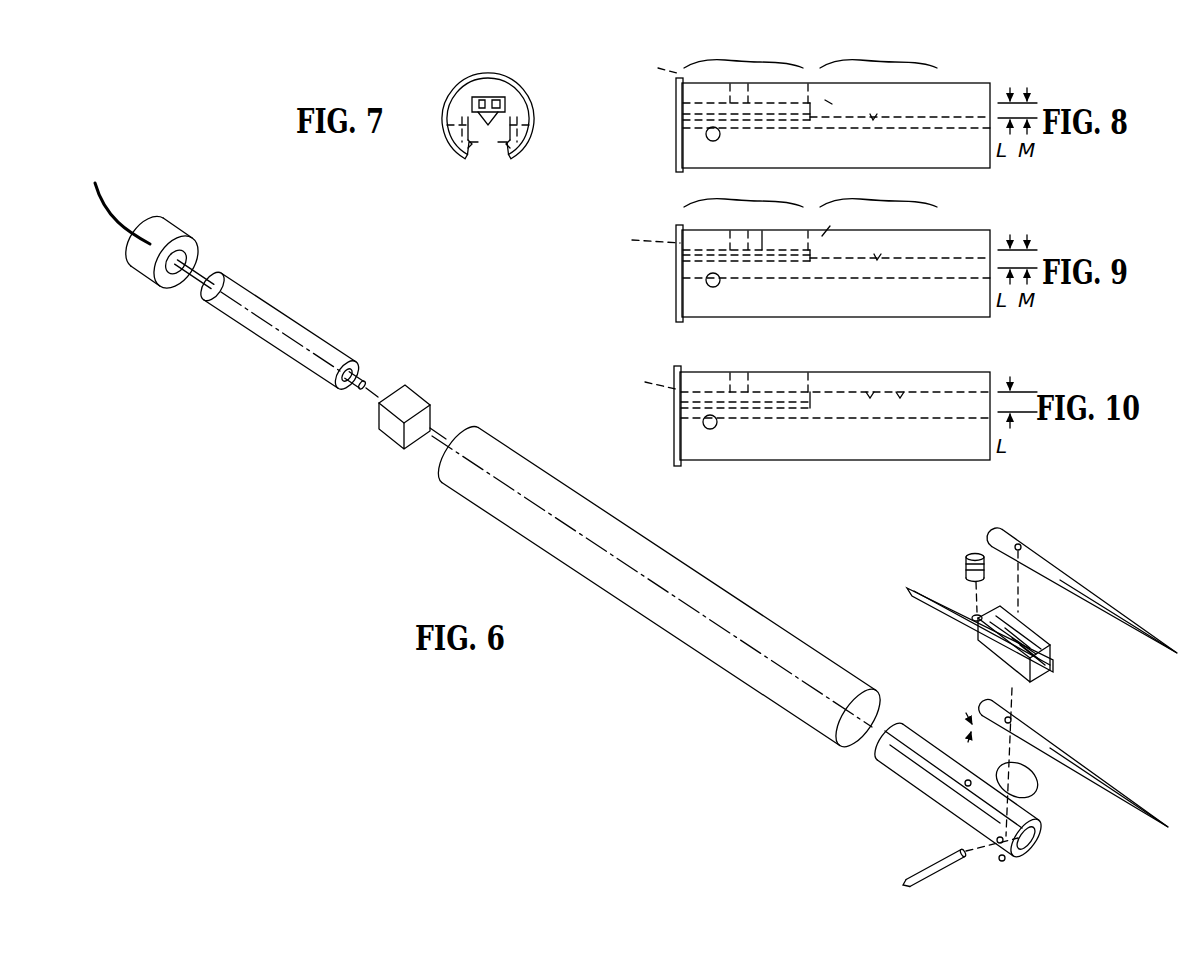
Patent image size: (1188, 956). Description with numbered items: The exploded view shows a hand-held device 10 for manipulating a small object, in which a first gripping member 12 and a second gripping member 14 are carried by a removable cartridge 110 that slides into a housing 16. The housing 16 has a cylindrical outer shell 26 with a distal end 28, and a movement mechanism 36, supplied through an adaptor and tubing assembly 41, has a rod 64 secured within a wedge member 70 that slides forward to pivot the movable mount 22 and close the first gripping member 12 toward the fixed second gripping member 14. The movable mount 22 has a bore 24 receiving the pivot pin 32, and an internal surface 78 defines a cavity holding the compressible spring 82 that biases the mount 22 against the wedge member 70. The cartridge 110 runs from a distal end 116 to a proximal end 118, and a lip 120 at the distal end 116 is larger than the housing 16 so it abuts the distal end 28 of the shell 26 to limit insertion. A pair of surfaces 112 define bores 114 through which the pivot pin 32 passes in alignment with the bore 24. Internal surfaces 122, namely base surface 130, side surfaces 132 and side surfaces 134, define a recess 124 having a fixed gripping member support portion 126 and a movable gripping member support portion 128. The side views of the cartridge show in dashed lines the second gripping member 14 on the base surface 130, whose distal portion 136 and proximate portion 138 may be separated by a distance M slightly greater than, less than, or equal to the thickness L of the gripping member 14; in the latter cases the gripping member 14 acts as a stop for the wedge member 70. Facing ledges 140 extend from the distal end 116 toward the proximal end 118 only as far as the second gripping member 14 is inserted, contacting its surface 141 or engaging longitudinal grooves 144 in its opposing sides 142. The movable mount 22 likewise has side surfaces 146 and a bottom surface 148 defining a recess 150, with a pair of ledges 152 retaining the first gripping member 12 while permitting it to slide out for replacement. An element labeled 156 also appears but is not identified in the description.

In FIG. 6, the device 10 is at (352, 522).
In FIG. 6, the first gripping member 12 is at (1074, 567).
In FIG. 6, the second gripping member 14 is at (1099, 769).
In FIG. 8, the second gripping member 14 is at (656, 73).
In FIG. 9, the second gripping member 14 is at (640, 243).
In FIG. 10, the second gripping member 14 is at (646, 384).
In FIG. 6, the housing 16 is at (684, 654).
In FIG. 6, the movable mount 22 is at (950, 630).
In FIG. 6, the bore 24 is at (1052, 656).
In FIG. 6, the outer shell 26 is at (722, 670).
In FIG. 6, the distal end 28 is at (836, 754).
In FIG. 6, the pivot pin 32 is at (925, 864).
In FIG. 6, the movement mechanism 36 is at (296, 318).
In FIG. 6, the adaptor and tubing assembly 41 is at (176, 212).
In FIG. 6, the rod 64 is at (368, 385).
In FIG. 6, the wedge member 70 is at (388, 432).
In FIG. 6, the internal surface 78 is at (972, 620).
In FIG. 6, the compressible spring 82 is at (973, 553).
In FIG. 6, the cartridge 110 is at (920, 802).
In FIG. 7, the cartridge 110 is at (539, 97).
In FIG. 8, the cartridge 110 is at (803, 122).
In FIG. 9, the cartridge 110 is at (821, 262).
In FIG. 10, the cartridge 110 is at (809, 414).
In FIG. 6, the surfaces 112 is at (986, 840).
In FIG. 6, the bores 114 is at (997, 861).
In FIG. 8, the bores 114 is at (715, 142).
In FIG. 9, the bores 114 is at (712, 287).
In FIG. 10, the bores 114 is at (710, 429).
In FIG. 6, the distal end 116 is at (1024, 872).
In FIG. 6, the proximal end 118 is at (866, 774).
In FIG. 6, the lip 120 is at (1060, 818).
In FIG. 7, the lip 120 is at (500, 93).
In FIG. 8, the lip 120 is at (677, 164).
In FIG. 9, the lip 120 is at (677, 275).
In FIG. 10, the lip 120 is at (676, 430).
In FIG. 6, the internal surfaces 122 is at (898, 730).
In FIG. 7, the internal surfaces 122 is at (496, 148).
In FIG. 6, the recess 124 is at (927, 742).
In FIG. 7, the recess 124 is at (470, 130).
In FIG. 8, the recess 124 is at (758, 108).
In FIG. 9, the recess 124 is at (809, 225).
In FIG. 10, the recess 124 is at (822, 378).
In FIG. 6, the fixed gripping member support portion 126 is at (996, 870).
In FIG. 6, the movable gripping member support portion 128 is at (1038, 812).
In FIG. 6, the base surface 130 is at (1050, 862).
In FIG. 7, the base surface 130 is at (487, 97).
In FIG. 8, the base surface 130 is at (882, 100).
In FIG. 9, the base surface 130 is at (890, 228).
In FIG. 10, the base surface 130 is at (903, 380).
In FIG. 6, the side surfaces 132 is at (984, 734).
In FIG. 7, the side surfaces 132 is at (457, 144).
In FIG. 6, the side surfaces 134 is at (937, 837).
In FIG. 7, the side surfaces 134 is at (526, 148).
In FIG. 7, the distal portion 136 is at (538, 103).
In FIG. 8, the distal portion 136 is at (746, 76).
In FIG. 9, the distal portion 136 is at (746, 217).
In FIG. 10, the distal portion 136 is at (752, 380).
In FIG. 7, the proximate portion 138 is at (543, 131).
In FIG. 8, the proximate portion 138 is at (836, 80).
In FIG. 9, the proximate portion 138 is at (836, 225).
In FIG. 10, the proximate portion 138 is at (873, 372).
In FIG. 6, the facing ledges 140 is at (1058, 843).
In FIG. 7, the facing ledges 140 is at (512, 100).
In FIG. 8, the facing ledges 140 is at (849, 103).
In FIG. 9, the facing ledges 140 is at (852, 219).
In FIG. 10, the facing ledges 140 is at (682, 404).
In FIG. 6, the surface 141 is at (1053, 732).
In FIG. 6, the opposing sides 142 is at (1088, 750).
In FIG. 9, the longitudinal grooves 144 is at (776, 226).
In FIG. 6, the side surfaces 146 is at (1003, 622).
In FIG. 6, the bottom surface 148 is at (1067, 678).
In FIG. 6, the recess 150 is at (1043, 634).
In FIG. 6, the ledges 152 is at (1053, 653).
In FIG. 6, the blade base 156 is at (1060, 716).